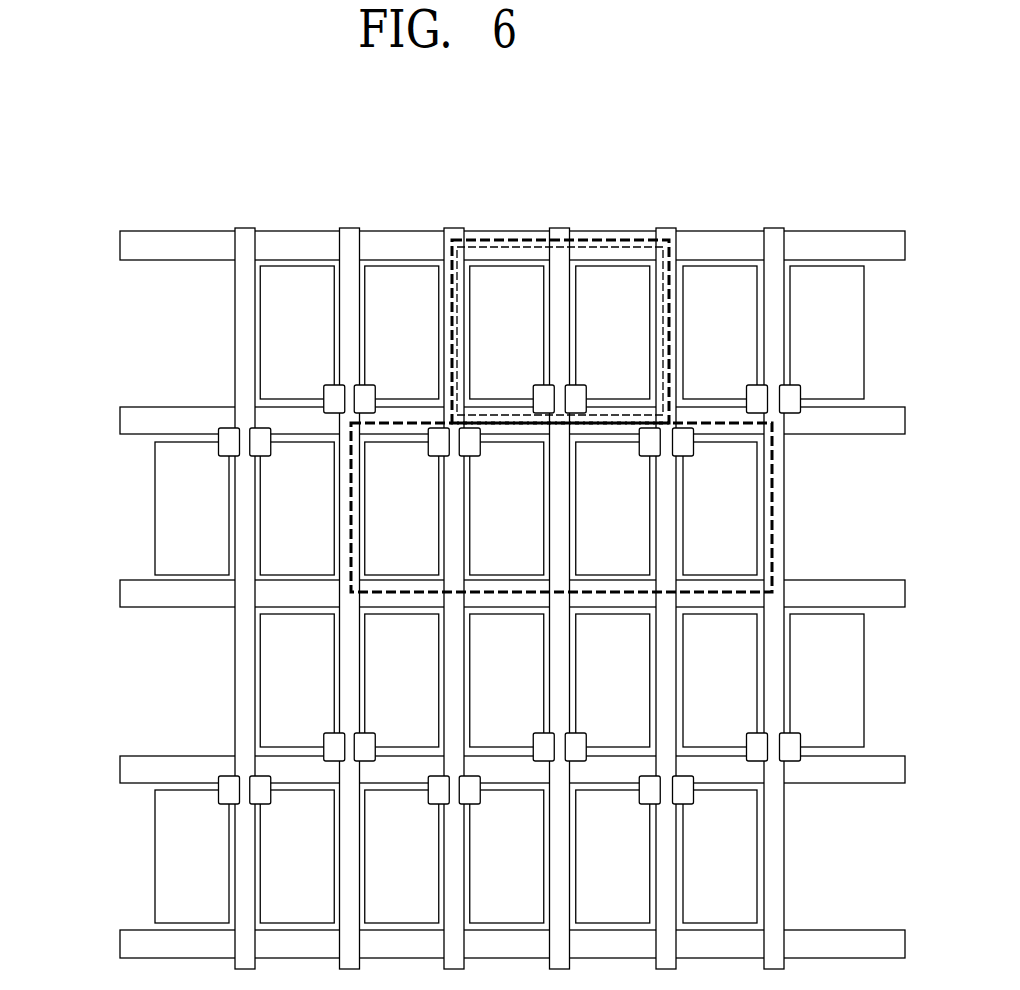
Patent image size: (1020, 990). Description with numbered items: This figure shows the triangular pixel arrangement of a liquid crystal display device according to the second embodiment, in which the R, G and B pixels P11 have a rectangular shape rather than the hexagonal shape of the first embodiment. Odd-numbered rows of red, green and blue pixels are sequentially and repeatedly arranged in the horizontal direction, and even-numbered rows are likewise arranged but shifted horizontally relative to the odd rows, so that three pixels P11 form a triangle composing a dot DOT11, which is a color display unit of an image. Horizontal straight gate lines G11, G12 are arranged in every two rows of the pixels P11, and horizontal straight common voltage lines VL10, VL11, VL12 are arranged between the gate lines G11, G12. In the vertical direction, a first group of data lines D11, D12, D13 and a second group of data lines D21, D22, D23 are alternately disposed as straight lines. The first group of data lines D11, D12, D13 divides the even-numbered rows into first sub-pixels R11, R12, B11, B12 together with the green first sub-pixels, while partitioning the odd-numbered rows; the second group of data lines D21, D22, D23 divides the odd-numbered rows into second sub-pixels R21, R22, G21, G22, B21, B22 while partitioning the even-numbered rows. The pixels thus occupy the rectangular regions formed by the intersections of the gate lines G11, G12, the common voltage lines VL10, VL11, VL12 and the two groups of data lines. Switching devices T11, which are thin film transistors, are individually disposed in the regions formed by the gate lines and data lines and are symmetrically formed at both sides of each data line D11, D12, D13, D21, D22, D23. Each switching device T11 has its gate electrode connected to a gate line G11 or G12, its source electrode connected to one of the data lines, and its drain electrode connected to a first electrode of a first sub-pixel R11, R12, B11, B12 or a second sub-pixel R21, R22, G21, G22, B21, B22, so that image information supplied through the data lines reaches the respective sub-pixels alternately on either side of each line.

The common voltage line VL10 is at (482, 246).
The common voltage line VL11 is at (482, 594).
The common voltage line VL12 is at (484, 935).
The gate line G11 is at (491, 422).
The gate line G12 is at (490, 768).
The first group data line D11 is at (247, 582).
The second group data line D21 is at (352, 582).
The first group data line D12 is at (454, 582).
The second group data line D22 is at (559, 582).
The first group data line D13 is at (662, 582).
The second group data line D23 is at (768, 582).
The pixel P11 is at (502, 240).
The switching device T11 is at (578, 394).
The dot DOT11 is at (624, 240).
The first sub-pixel R11 is at (197, 675).
The first sub-pixel R12 is at (292, 675).
The second sub-pixel R21 is at (512, 513).
The second sub-pixel R22 is at (607, 513).
The second sub-pixel G21 is at (302, 513).
The second sub-pixel G22 is at (396, 513).
The first sub-pixel B11 is at (407, 675).
The first sub-pixel B12 is at (501, 675).
The second sub-pixel B21 is at (725, 513).
The second sub-pixel B22 is at (822, 513).